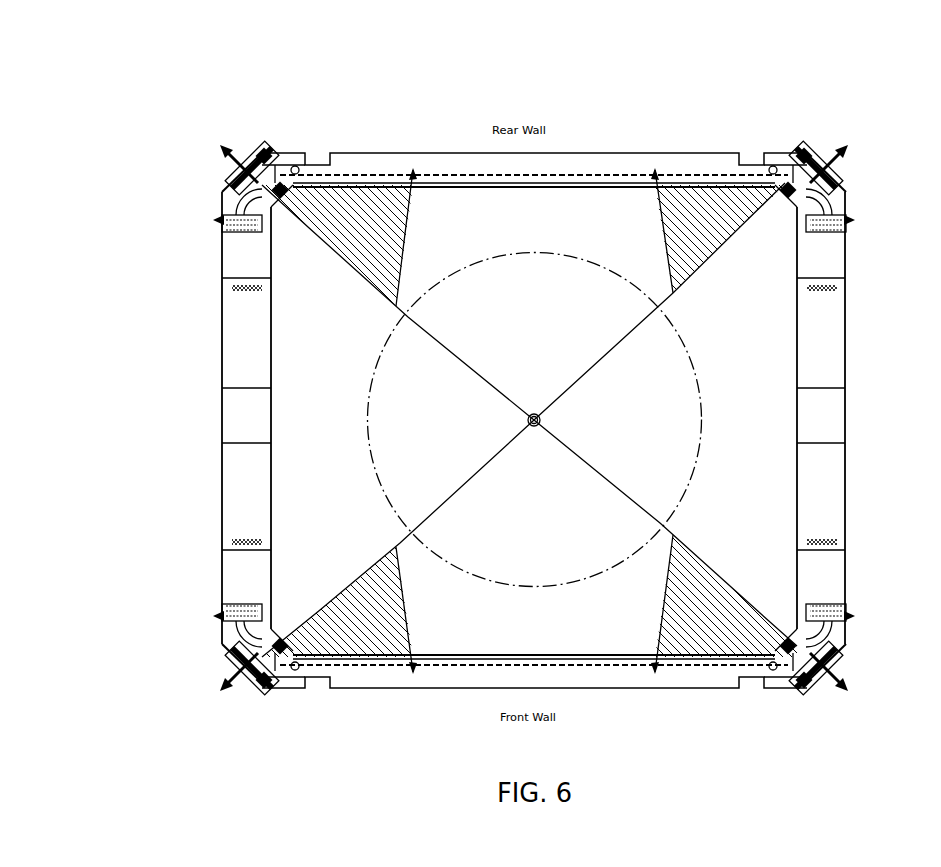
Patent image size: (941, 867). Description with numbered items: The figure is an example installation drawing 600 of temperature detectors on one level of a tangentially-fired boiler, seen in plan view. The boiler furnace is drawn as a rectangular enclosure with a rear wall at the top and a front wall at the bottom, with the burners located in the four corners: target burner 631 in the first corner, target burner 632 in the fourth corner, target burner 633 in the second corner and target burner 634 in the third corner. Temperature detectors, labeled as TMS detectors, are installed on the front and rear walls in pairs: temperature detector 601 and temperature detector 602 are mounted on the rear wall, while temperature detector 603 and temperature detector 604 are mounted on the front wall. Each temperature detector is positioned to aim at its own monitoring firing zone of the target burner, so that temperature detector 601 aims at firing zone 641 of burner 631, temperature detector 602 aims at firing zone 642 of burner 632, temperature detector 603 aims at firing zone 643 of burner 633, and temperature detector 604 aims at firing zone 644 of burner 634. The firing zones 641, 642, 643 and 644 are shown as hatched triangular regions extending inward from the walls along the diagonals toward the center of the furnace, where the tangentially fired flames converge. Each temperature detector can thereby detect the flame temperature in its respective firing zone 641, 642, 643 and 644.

The TMS detection system 600 is at (120, 56).
The temperature detector 601 is at (655, 127).
The temperature detector 602 is at (418, 136).
The temperature detector 603 is at (687, 702).
The temperature detector 604 is at (447, 702).
The target burner 631 is at (868, 130).
The target burner 632 is at (303, 136).
The target burner 633 is at (857, 666).
The target burner 634 is at (213, 660).
The monitoring firing zone 641 is at (705, 288).
The monitoring firing zone 642 is at (436, 218).
The monitoring firing zone 643 is at (737, 552).
The monitoring firing zone 644 is at (347, 562).